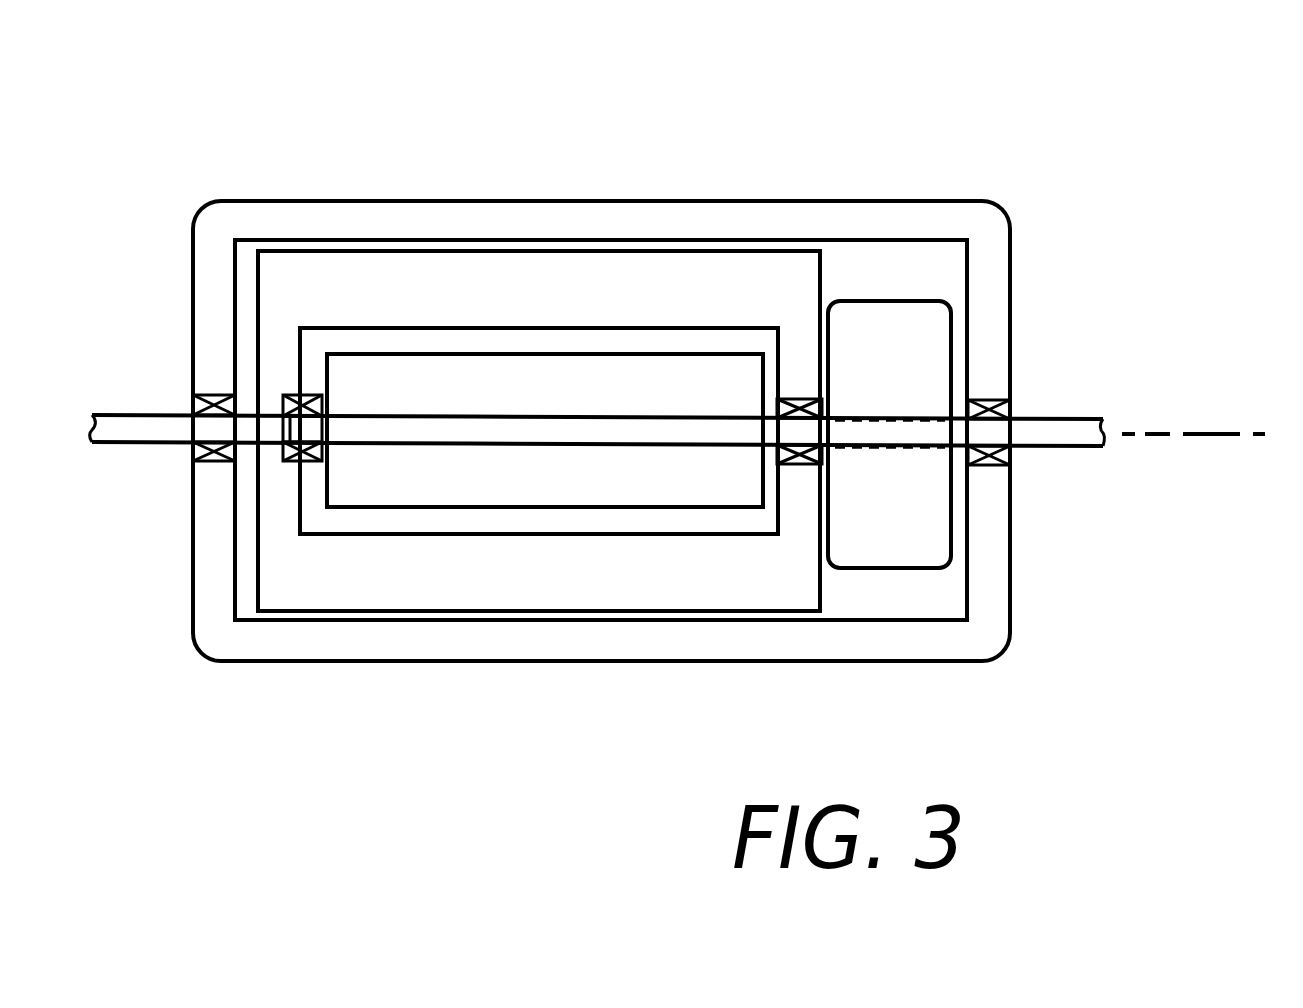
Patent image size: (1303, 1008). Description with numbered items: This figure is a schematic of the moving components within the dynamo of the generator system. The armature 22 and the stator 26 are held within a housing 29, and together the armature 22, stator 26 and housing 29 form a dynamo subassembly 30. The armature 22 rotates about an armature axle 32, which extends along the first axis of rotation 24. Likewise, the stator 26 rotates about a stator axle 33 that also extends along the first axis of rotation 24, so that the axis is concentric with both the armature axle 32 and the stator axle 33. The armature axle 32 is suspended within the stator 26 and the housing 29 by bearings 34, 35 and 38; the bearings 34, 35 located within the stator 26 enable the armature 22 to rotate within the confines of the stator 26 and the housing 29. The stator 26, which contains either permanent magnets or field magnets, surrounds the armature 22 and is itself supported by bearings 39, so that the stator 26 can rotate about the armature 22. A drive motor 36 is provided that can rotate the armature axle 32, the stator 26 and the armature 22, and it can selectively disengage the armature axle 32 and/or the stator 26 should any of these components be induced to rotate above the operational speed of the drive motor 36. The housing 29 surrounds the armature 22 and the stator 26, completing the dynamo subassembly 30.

The dynamo subassembly 30 is at (835, 158).
The housing 29 is at (895, 213).
The stator 26 is at (650, 273).
The armature 22 is at (685, 385).
The stator axle 33 is at (163, 430).
The armature axle 32 is at (1052, 437).
The drive motor 36 is at (932, 330).
The bearings 39 is at (212, 393).
The bearing 34 is at (292, 462).
The bearing 35 is at (800, 464).
The bearing 38 is at (990, 400).
The first axis of rotation 24 is at (1212, 437).